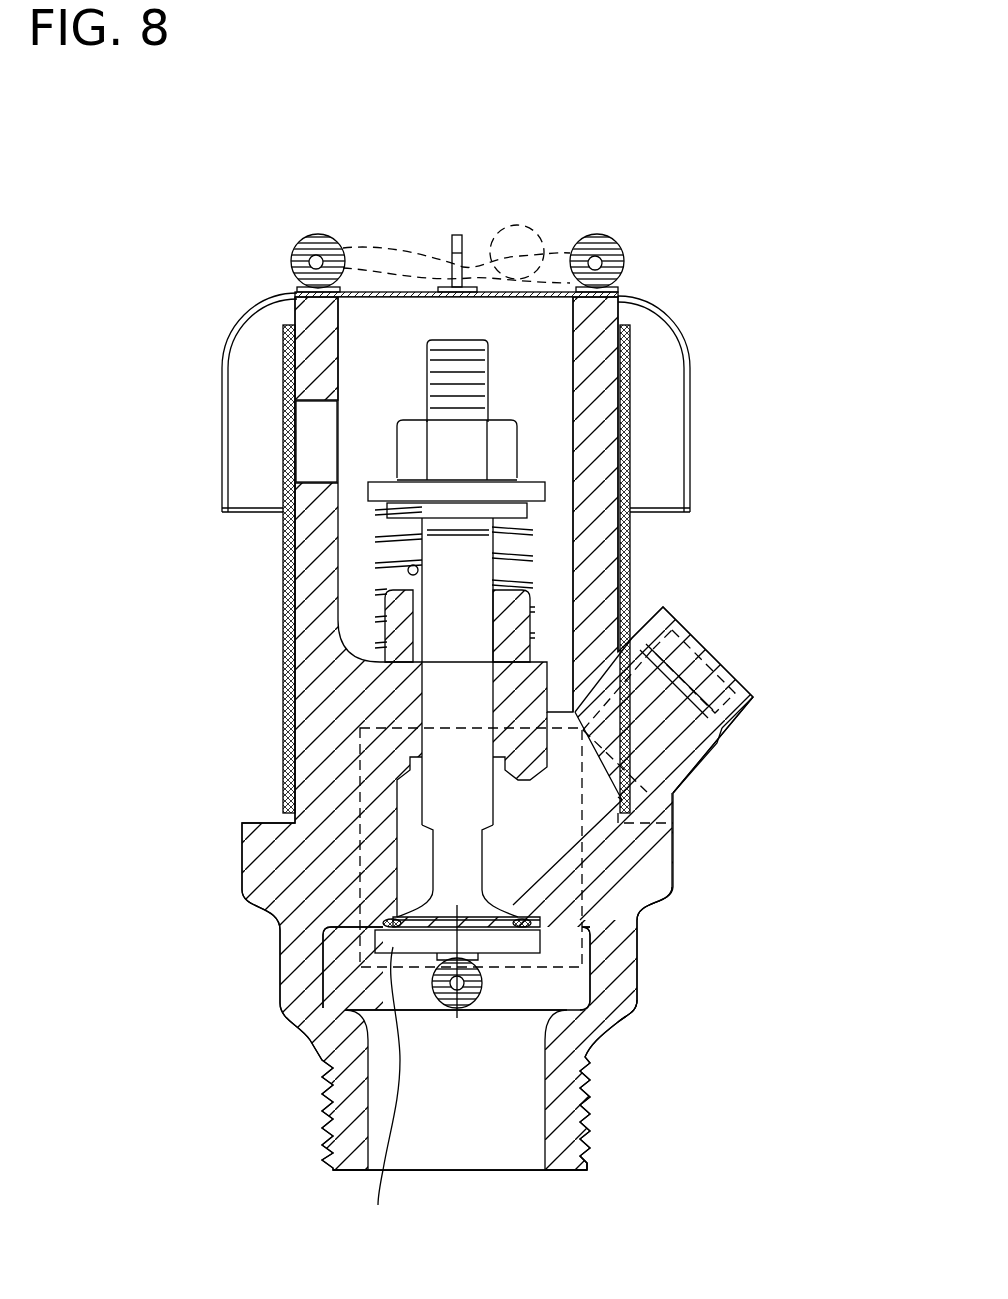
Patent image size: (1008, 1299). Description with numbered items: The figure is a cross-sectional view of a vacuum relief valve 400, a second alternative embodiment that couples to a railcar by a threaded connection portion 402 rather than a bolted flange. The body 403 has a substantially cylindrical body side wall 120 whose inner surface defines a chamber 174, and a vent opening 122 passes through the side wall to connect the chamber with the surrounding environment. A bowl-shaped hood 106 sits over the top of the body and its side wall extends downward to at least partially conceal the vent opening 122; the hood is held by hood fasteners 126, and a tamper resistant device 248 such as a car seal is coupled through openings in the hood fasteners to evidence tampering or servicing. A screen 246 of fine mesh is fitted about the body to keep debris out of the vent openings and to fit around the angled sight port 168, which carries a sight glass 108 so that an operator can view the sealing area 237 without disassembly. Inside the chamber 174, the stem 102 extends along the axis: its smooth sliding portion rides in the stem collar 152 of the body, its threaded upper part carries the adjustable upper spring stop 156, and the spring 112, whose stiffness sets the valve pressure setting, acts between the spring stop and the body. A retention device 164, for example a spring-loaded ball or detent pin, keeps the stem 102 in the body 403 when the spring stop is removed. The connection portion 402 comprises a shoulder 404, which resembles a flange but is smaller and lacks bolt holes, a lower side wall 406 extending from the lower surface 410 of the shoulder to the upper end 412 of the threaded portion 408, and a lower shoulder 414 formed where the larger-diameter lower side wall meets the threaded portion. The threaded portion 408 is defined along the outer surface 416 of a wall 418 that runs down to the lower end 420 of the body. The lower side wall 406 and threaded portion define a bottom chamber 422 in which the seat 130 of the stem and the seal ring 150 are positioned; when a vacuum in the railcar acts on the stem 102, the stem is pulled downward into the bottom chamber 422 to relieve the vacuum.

The vacuum relief valve 400 is at (692, 142).
The threaded connection portion 402 is at (686, 1035).
The body side wall 120 is at (598, 545).
The body 403 is at (328, 556).
The vent opening 122 is at (317, 438).
The shoulder 404 is at (660, 858).
The lower surface of shoulder 410 is at (652, 902).
The sight port 168 is at (700, 757).
The sight glass 108 is at (748, 707).
The screen 246 is at (627, 457).
The hood 106 is at (662, 320).
The hood fastener 126 is at (600, 240).
The tamper resistant device 248 is at (380, 243).
The chamber 174 is at (413, 348).
The upper spring stop 156 is at (527, 435).
The stem 102 is at (438, 695).
The spring 112 is at (387, 535).
The retention device 164 is at (413, 570).
The stem collar 152 is at (520, 677).
The seal ring 150 is at (617, 932).
The lower side wall 406 is at (623, 978).
The sealing area 237 is at (360, 950).
The bottom chamber 422 is at (535, 1062).
The seat 130 is at (378, 1093).
The threaded portion 408 is at (615, 1123).
The upper end of threaded portion 412 is at (318, 1062).
The outer surface of wall 416 is at (588, 1098).
The lower shoulder 414 is at (620, 1030).
The wall 418 is at (568, 1147).
The lower end 420 is at (345, 1170).